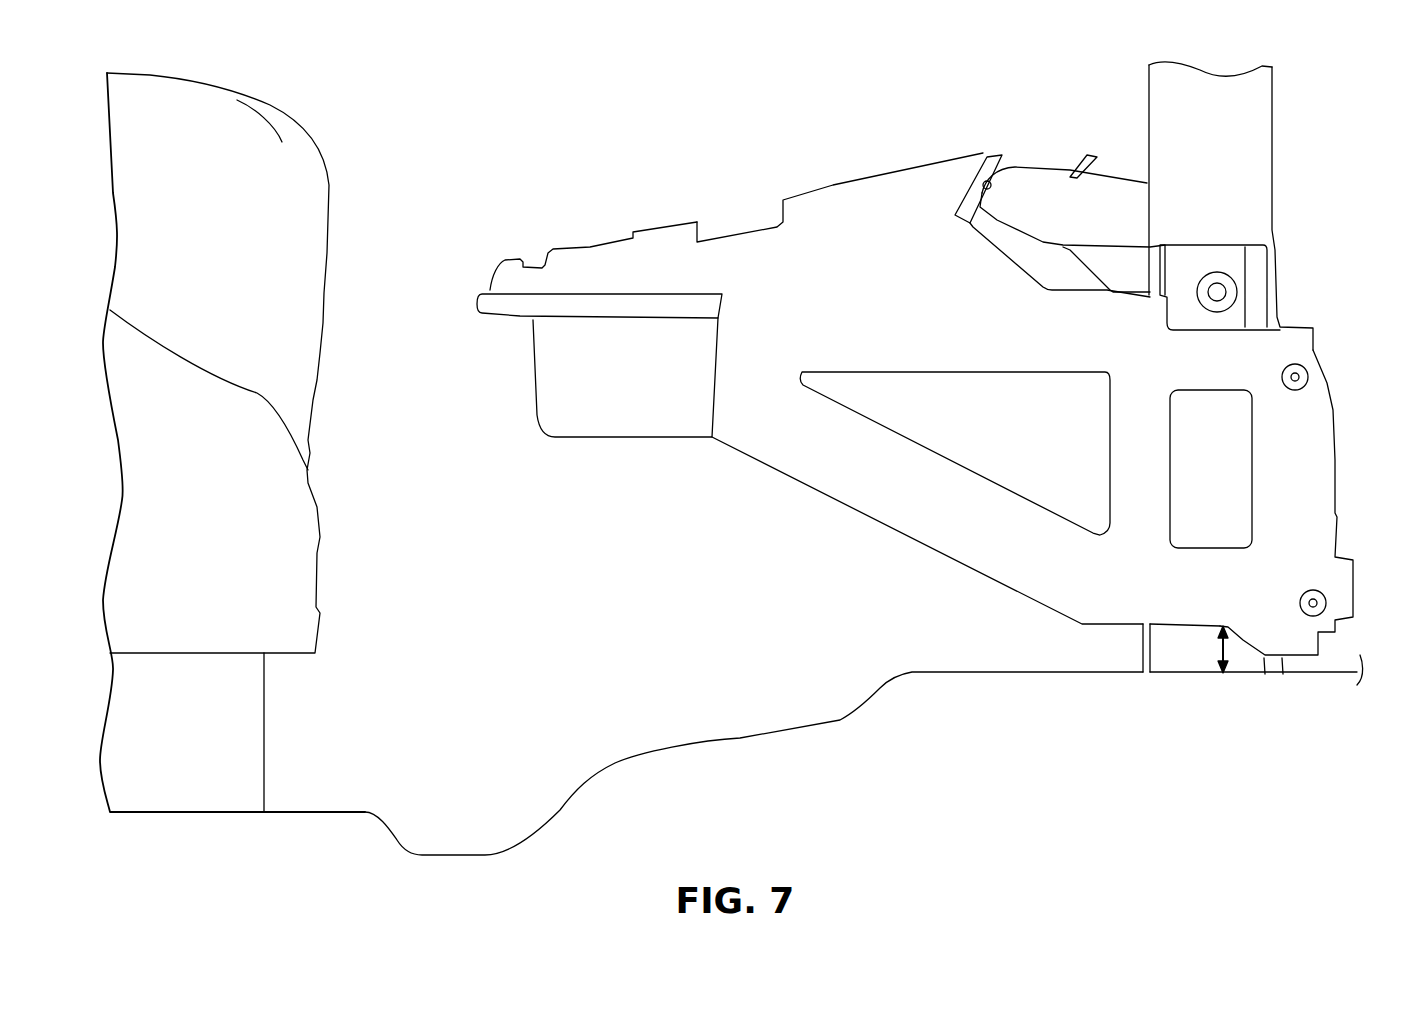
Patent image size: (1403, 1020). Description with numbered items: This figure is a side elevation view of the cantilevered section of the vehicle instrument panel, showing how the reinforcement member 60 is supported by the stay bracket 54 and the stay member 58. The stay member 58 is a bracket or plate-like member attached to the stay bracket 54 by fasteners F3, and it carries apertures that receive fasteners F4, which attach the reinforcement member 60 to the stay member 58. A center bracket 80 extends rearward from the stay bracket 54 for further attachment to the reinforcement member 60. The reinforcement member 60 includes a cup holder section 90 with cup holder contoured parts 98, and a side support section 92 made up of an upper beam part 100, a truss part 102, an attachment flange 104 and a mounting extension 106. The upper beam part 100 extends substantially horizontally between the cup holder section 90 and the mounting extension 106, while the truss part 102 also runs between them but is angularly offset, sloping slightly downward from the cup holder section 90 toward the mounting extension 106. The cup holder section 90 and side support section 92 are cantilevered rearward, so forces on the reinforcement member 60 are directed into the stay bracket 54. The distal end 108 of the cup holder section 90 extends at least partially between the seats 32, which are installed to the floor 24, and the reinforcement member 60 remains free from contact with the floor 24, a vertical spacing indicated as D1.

The floor 24 is at (737, 740).
The seat 32 is at (312, 403).
The stay bracket 54 is at (1273, 172).
The stay member 58 is at (1143, 648).
The reinforcement member 60 is at (772, 224).
The center bracket 80 is at (1102, 168).
The cup holder section 90 is at (590, 243).
The side support section 92 is at (1020, 375).
The cup holder contoured part 98 is at (722, 302).
The upper beam part 100 is at (970, 372).
The truss part 102 is at (873, 515).
The attachment flange 104 is at (1067, 160).
The mounting extension 106 is at (1250, 475).
The distal end 108 is at (477, 300).
The fastener F3 is at (1237, 292).
The fastener F4 is at (1283, 373).
The distance D1 is at (1218, 650).